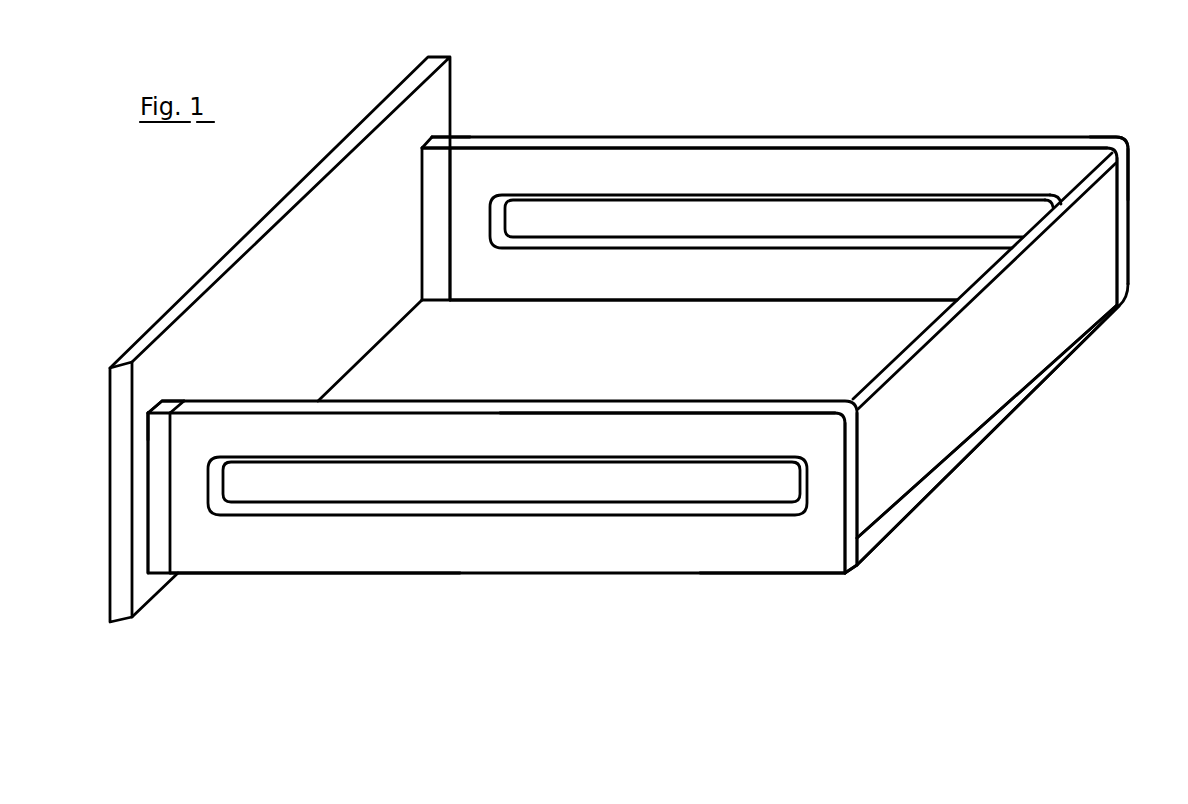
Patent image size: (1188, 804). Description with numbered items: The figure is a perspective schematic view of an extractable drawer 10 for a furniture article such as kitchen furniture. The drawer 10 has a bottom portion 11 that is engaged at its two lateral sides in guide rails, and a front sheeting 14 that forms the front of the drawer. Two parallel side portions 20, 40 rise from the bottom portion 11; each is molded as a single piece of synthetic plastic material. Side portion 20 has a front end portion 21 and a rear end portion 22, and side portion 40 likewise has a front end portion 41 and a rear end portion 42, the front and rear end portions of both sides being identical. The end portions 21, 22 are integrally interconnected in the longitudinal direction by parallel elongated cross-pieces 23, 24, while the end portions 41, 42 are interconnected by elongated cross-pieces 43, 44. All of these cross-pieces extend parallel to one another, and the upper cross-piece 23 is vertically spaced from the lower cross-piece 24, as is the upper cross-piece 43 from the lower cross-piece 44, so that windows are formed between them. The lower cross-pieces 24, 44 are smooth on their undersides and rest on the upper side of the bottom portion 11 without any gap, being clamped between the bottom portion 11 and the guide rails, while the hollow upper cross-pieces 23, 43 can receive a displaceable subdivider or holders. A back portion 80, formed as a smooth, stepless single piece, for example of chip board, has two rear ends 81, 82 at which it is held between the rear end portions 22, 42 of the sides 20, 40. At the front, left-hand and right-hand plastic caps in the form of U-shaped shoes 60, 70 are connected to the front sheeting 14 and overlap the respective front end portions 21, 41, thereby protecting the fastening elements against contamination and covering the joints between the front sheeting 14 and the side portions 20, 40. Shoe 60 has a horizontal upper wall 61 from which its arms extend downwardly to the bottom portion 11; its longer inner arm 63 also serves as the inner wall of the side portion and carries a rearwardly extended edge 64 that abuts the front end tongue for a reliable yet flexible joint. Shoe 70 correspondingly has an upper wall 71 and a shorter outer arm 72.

The drawer 10 is at (935, 496).
The bottom portion 11 is at (627, 364).
The front sheeting 14 is at (225, 260).
The side portion 20 is at (702, 137).
The front end portion 21 is at (487, 177).
The rear end portion 22 is at (1060, 185).
The upper cross-piece 23 is at (782, 153).
The lower cross-piece 24 is at (617, 242).
The side portion 40 is at (738, 400).
The front end portion 41 is at (202, 537).
The rear end portion 42 is at (830, 520).
The upper cross-piece 43 is at (668, 427).
The lower cross-piece 44 is at (462, 510).
The shoe 60 is at (437, 184).
The upper wall 61 is at (453, 150).
The inner arm 63 is at (436, 273).
The rearwardly extended edge 64 is at (453, 238).
The shoe 70 is at (178, 400).
The upper wall 71 is at (176, 393).
The outer arm 72 is at (160, 528).
The back portion 80 is at (1040, 318).
The rear end 81 is at (1113, 205).
The rear end 82 is at (860, 477).